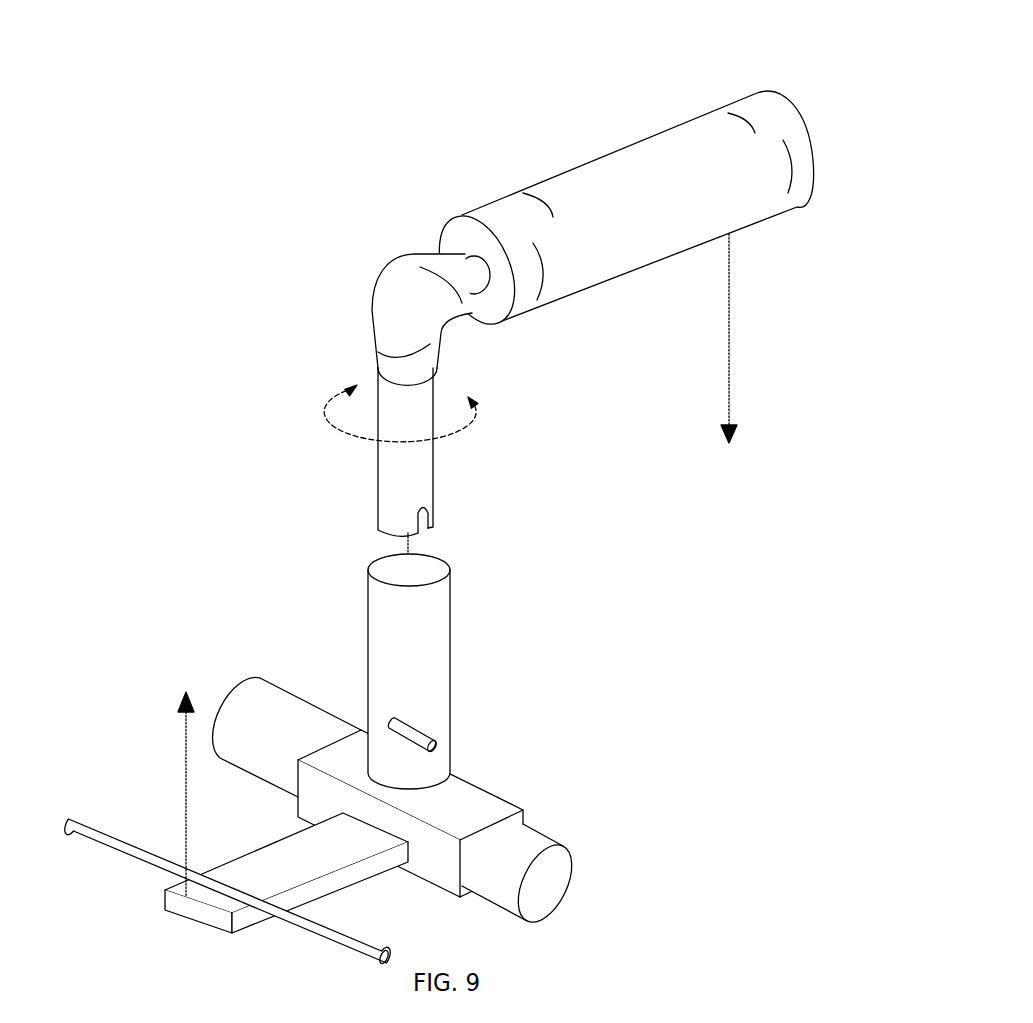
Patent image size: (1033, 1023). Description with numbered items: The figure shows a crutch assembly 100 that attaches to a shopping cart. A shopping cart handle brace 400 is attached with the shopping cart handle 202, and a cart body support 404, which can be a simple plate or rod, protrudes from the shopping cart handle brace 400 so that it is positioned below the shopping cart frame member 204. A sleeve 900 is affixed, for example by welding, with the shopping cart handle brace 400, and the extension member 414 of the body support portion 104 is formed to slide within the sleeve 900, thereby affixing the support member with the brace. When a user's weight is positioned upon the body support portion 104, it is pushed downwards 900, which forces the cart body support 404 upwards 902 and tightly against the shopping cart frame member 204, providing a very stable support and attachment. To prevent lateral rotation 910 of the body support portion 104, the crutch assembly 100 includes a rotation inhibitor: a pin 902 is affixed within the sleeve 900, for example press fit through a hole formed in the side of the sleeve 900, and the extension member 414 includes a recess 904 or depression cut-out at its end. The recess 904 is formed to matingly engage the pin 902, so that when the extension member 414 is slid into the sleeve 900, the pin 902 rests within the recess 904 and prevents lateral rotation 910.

The crutch assembly 100 is at (238, 106).
The body support portion 104 is at (643, 147).
The extension member 414 is at (380, 470).
The recess 904 is at (433, 527).
The lateral rotation 910 is at (460, 427).
The sleeve 900 is at (731, 352).
The pin 902 is at (441, 727).
The shopping cart handle brace 400 is at (495, 808).
The shopping cart handle 202 is at (540, 843).
The shopping cart frame member 204 is at (140, 855).
The cart body support 404 is at (284, 846).